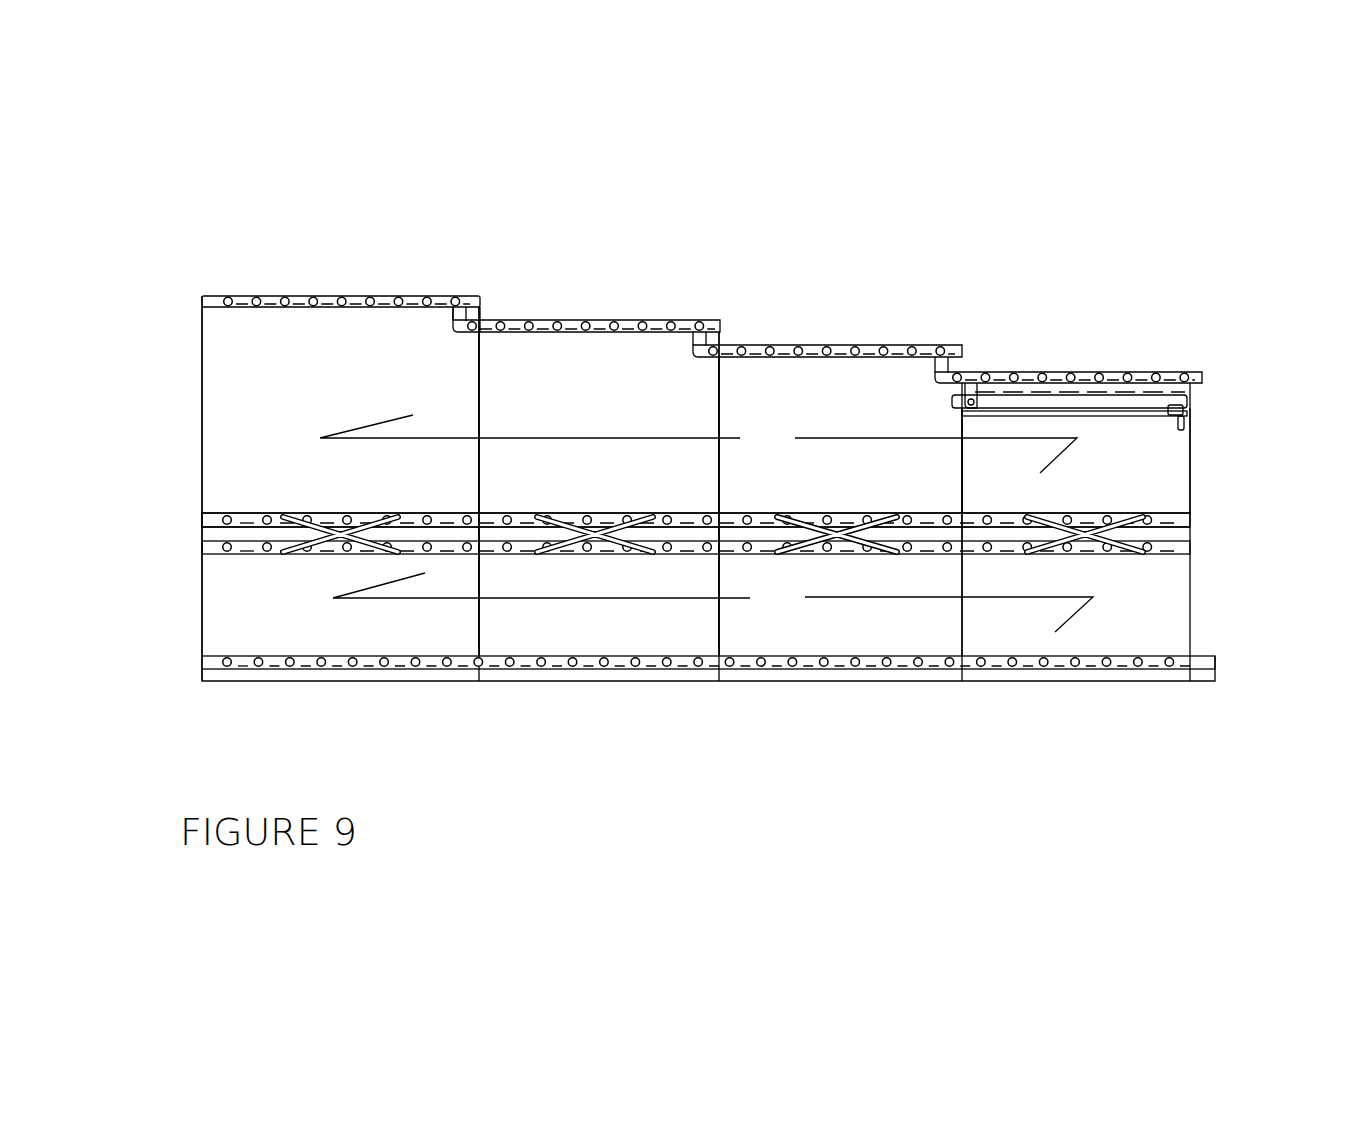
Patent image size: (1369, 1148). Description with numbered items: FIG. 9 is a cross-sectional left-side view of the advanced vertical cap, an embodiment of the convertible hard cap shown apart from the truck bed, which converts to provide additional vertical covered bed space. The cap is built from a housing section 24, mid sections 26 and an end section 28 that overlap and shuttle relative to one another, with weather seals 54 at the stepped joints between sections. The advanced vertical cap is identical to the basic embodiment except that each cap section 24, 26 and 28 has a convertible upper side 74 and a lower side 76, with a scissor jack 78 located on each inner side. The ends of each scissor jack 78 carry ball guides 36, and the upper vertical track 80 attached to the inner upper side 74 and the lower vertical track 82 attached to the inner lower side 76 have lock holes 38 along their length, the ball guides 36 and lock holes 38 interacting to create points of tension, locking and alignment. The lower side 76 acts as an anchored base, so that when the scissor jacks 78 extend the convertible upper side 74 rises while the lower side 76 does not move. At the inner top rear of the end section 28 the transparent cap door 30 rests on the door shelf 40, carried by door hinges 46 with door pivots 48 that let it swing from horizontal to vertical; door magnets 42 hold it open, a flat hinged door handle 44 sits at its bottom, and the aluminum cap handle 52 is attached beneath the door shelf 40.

The housing section 24 is at (293, 602).
The mid sections 26 is at (770, 623).
The end section 28 is at (983, 627).
The cap door 30 is at (1085, 405).
The ball guide 36 is at (945, 347).
The lock hole 38 is at (375, 300).
The door shelf 40 is at (1037, 418).
The door magnet 42 is at (1190, 412).
The door handle 44 is at (1155, 393).
The door hinge 46 is at (973, 387).
The door pivot 48 is at (977, 397).
The cap handle 52 is at (1188, 433).
The weather seal 54 is at (480, 328).
The convertible upper side 74 is at (698, 444).
The lower side 76 is at (713, 602).
The scissor jack 78 is at (617, 525).
The upper vertical track 80 is at (205, 517).
The lower vertical track 82 is at (203, 550).